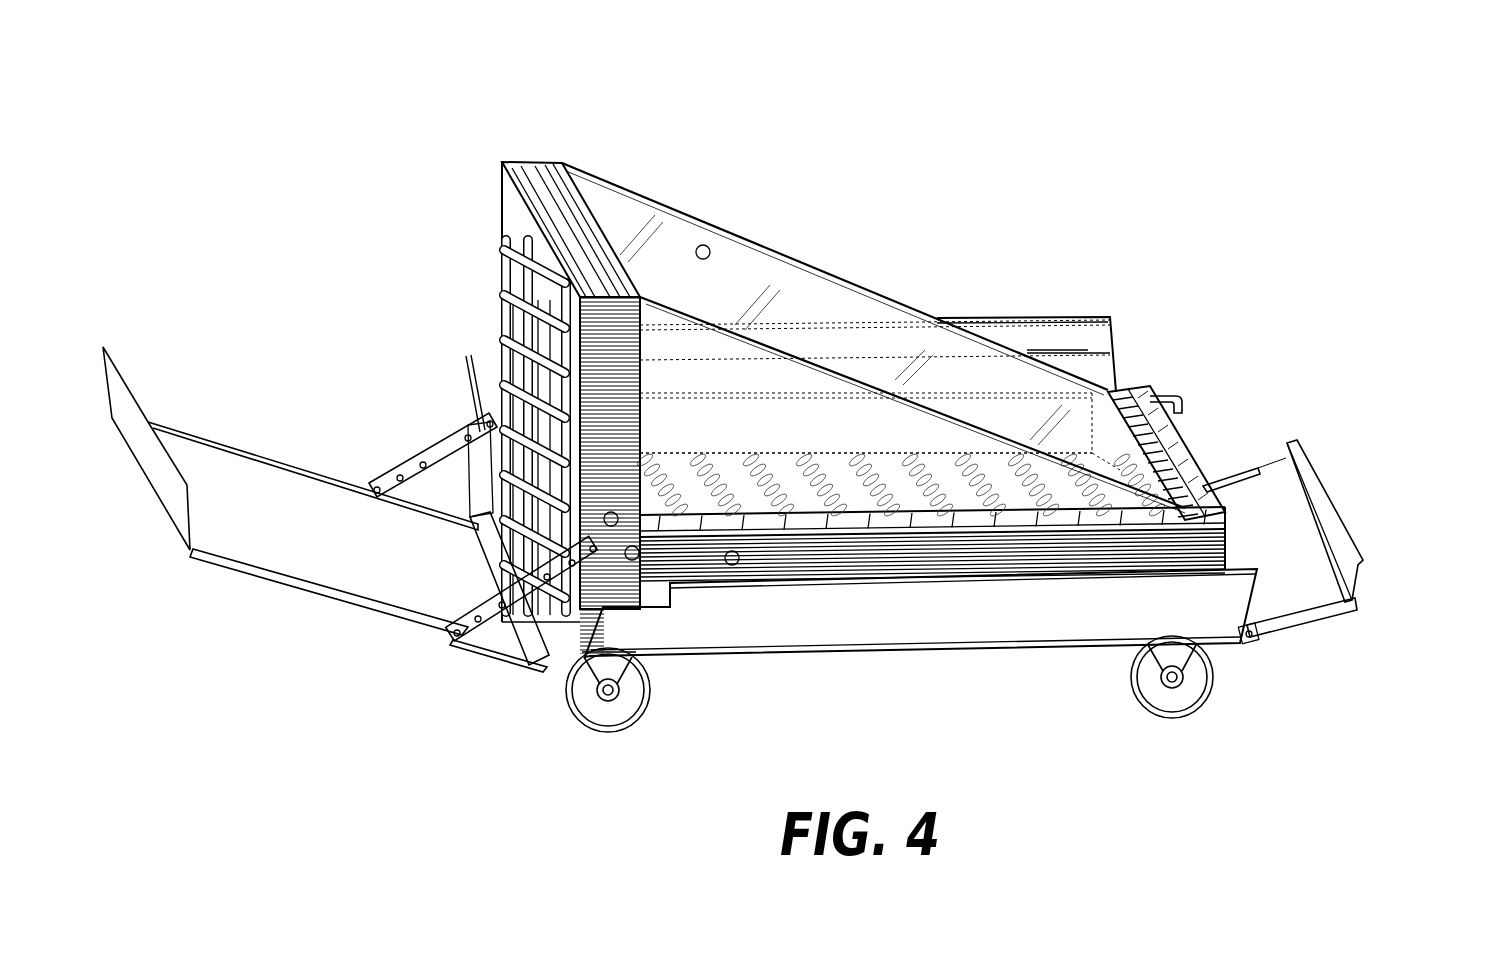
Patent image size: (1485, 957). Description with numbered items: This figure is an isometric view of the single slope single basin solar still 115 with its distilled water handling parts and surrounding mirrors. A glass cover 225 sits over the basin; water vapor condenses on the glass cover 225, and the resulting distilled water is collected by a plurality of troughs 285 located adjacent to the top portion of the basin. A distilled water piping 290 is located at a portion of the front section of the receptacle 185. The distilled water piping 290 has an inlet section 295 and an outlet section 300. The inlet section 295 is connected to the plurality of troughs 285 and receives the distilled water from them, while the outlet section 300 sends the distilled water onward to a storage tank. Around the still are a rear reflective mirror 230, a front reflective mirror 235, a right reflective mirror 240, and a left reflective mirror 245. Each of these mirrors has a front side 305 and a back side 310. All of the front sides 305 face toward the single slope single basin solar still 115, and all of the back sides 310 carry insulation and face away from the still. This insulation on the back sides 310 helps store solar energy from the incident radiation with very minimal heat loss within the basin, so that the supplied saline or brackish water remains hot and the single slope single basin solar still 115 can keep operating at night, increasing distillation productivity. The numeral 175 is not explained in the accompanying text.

The single slope single basin solar still 115 is at (897, 92).
The glass cover 225 is at (703, 245).
The plurality of troughs 285 is at (1108, 424).
The right reflective mirror 240 is at (1050, 305).
The front side 305 is at (1079, 325).
The inlet section 295 is at (1148, 378).
The distilled water piping 290 is at (1166, 380).
The outlet section 300 is at (1194, 394).
The front reflective mirror 235 is at (1369, 517).
The rear reflective mirror 230 is at (159, 530).
The back side 310 is at (342, 620).
The fastener 175 is at (611, 527).
The receptacle 185 is at (732, 566).
The left reflective mirror 245 is at (1105, 658).